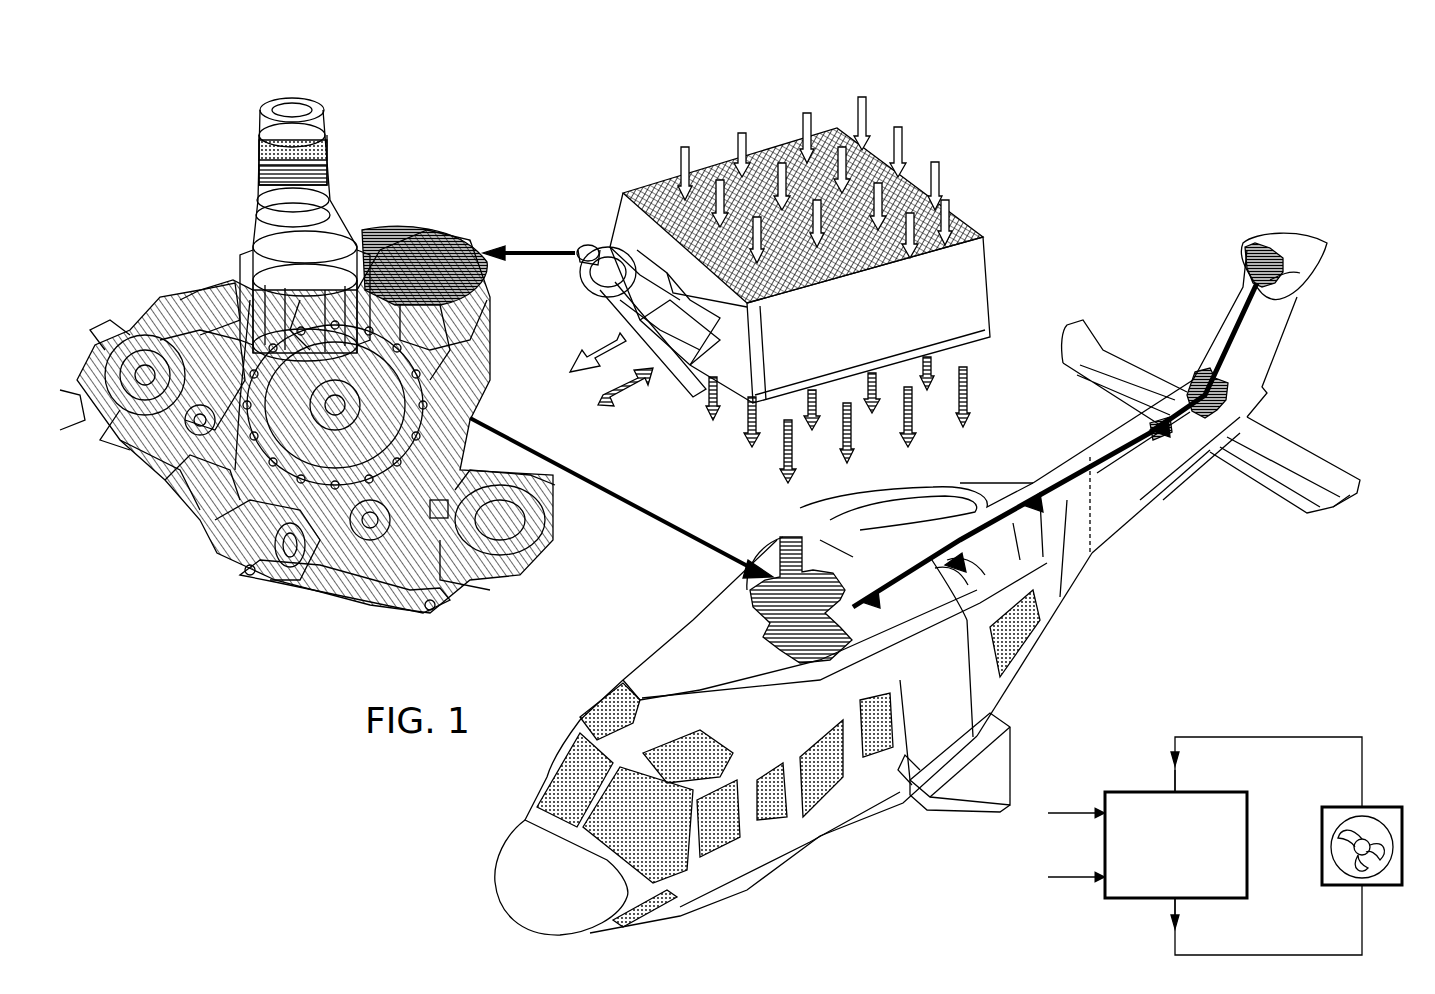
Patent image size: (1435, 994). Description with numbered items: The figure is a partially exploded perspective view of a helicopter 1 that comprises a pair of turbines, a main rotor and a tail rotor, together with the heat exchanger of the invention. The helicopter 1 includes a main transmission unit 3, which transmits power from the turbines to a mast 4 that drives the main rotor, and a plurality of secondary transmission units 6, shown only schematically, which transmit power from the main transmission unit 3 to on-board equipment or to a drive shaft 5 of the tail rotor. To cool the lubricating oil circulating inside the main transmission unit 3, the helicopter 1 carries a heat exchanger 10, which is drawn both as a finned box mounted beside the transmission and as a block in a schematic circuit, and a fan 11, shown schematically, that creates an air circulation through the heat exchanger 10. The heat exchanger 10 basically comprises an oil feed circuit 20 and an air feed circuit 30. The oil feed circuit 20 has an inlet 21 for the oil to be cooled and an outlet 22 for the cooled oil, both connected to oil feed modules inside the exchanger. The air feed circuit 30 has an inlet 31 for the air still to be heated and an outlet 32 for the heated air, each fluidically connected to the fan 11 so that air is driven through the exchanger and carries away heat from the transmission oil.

The helicopter 1 is at (540, 707).
The main transmission unit 3 is at (235, 270).
The mast 4 is at (350, 208).
The drive shaft 5 is at (1248, 236).
The secondary transmission units 6 is at (293, 605).
The heat exchanger 10 is at (968, 178).
The fan 11 is at (1380, 798).
The oil feed circuit 20 is at (580, 395).
The inlet 21 is at (652, 375).
The outlet 22 is at (617, 330).
The air feed circuit 30 is at (1272, 705).
The inlet 31 is at (1177, 788).
The outlet 32 is at (1177, 900).